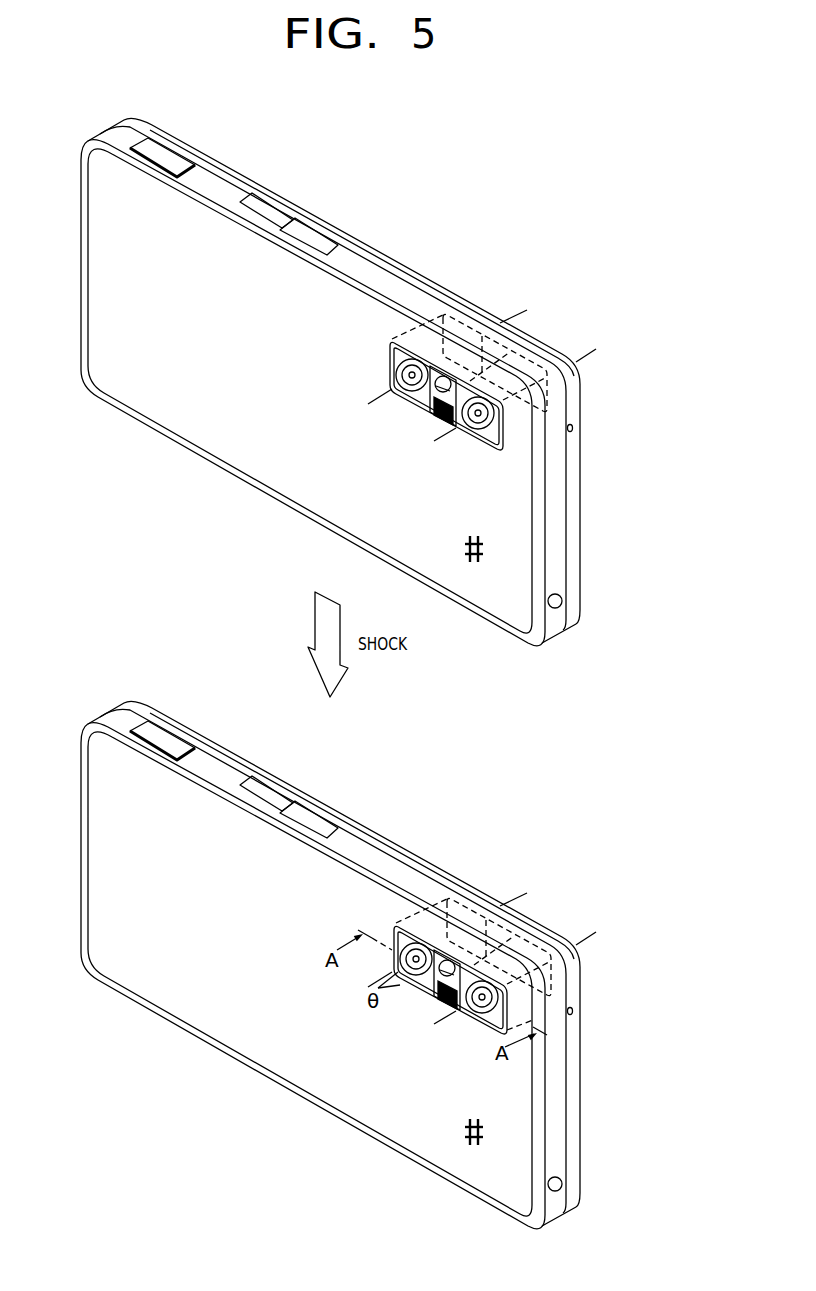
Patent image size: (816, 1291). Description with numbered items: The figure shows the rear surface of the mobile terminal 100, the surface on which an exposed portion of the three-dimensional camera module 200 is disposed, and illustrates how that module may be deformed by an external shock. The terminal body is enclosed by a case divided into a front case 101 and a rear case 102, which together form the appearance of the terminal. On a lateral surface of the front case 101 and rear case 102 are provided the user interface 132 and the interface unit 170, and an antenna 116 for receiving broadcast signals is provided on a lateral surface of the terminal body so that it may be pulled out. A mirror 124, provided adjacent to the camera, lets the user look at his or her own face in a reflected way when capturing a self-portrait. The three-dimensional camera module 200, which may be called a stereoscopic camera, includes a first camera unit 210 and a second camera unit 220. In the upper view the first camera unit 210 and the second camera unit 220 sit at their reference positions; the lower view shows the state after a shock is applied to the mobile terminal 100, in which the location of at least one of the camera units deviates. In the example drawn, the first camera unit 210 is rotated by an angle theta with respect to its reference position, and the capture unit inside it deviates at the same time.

The mobile terminal 100 is at (418, 224).
The front case 101 is at (574, 503).
The rear case 102 is at (559, 541).
The antenna 116 is at (563, 601).
The mirror 124 is at (576, 427).
The user interface 132 is at (273, 210).
The interface unit 170 is at (168, 161).
The 3D camera module 200 is at (501, 343).
The first camera unit 210 is at (426, 352).
The second camera unit 220 is at (489, 389).